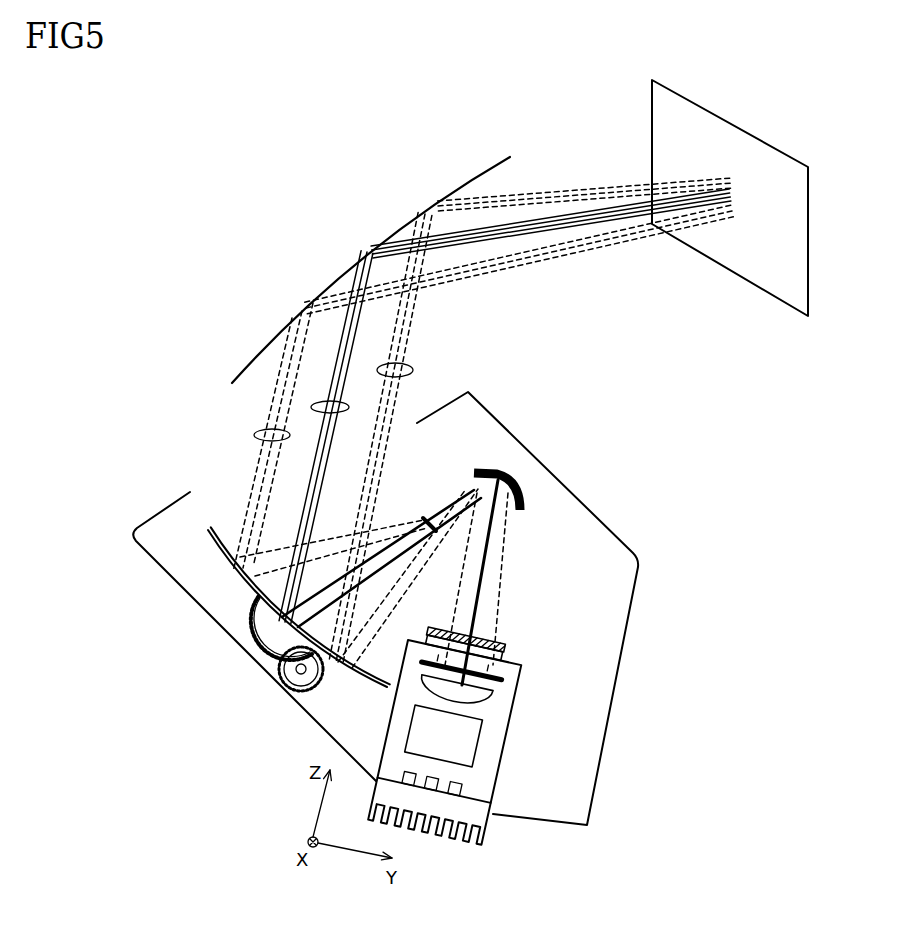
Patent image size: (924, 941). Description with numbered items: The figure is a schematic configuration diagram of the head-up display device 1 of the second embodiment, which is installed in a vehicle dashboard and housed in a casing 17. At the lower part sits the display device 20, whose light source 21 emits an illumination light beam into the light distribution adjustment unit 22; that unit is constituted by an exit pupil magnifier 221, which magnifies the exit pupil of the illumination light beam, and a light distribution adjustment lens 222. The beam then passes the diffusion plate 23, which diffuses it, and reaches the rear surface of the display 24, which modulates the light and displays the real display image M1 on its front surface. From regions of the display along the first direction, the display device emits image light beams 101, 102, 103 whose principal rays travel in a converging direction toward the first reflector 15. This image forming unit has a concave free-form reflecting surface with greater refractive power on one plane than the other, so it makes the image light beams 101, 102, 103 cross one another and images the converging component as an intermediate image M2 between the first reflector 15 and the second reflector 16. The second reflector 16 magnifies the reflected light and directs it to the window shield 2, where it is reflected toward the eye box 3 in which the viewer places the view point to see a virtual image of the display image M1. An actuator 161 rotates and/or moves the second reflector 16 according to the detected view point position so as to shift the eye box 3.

The head-up display device 1 is at (625, 390).
The window shield 2 is at (282, 333).
The eye box 3 is at (673, 158).
The first reflector 15 is at (492, 470).
The second reflector 16 is at (250, 585).
The actuator 161 is at (284, 674).
The casing 17 is at (627, 543).
The display device 20 is at (489, 793).
The light source 21 is at (443, 783).
The light distribution adjustment unit 22 is at (555, 731).
The exit pupil magnifier 221 is at (463, 745).
The light distribution adjustment lens 222 is at (493, 690).
The diffusion plate 23 is at (497, 678).
The display 24 is at (510, 657).
The display image M1 is at (508, 647).
The intermediate image M2 is at (428, 518).
The image light beam 101 is at (254, 436).
The image light beam 102 is at (346, 403).
The image light beam 103 is at (412, 368).